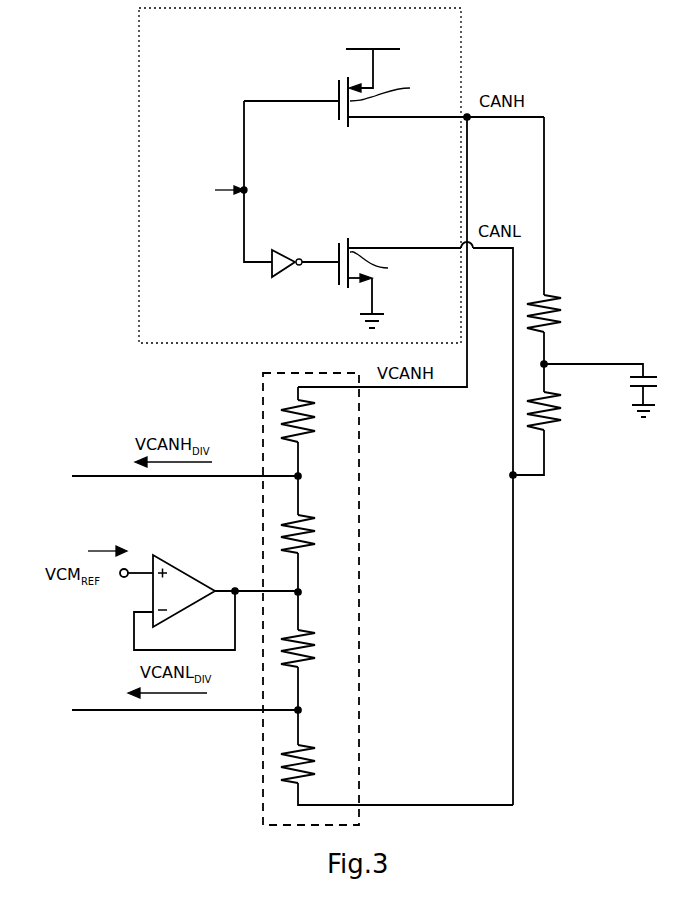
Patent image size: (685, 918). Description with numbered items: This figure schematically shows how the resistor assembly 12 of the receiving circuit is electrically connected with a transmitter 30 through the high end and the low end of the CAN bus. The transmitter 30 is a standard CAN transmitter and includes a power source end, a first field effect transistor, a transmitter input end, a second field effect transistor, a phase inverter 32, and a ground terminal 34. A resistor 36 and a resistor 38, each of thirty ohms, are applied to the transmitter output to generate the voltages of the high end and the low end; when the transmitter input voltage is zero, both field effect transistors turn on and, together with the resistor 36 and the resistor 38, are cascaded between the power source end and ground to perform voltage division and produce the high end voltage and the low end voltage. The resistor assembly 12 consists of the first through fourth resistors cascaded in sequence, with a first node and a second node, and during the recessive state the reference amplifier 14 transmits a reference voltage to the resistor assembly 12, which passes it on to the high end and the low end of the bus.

The resistor assembly 12 is at (262, 390).
The reference amplifier 14 is at (165, 562).
The transmitter 30 is at (139, 172).
The phase inverter 32 is at (272, 268).
The ground terminal 34 is at (362, 314).
The resistor 36 is at (560, 300).
The resistor 38 is at (555, 425).